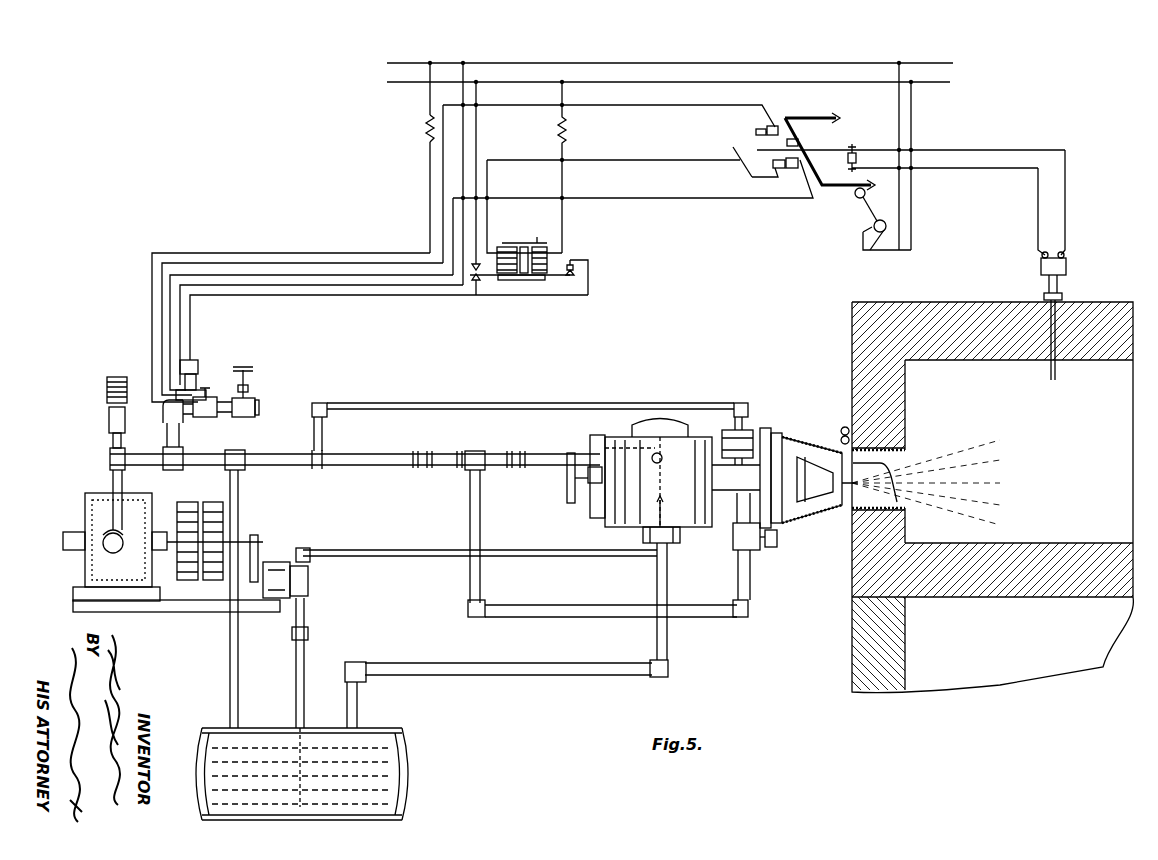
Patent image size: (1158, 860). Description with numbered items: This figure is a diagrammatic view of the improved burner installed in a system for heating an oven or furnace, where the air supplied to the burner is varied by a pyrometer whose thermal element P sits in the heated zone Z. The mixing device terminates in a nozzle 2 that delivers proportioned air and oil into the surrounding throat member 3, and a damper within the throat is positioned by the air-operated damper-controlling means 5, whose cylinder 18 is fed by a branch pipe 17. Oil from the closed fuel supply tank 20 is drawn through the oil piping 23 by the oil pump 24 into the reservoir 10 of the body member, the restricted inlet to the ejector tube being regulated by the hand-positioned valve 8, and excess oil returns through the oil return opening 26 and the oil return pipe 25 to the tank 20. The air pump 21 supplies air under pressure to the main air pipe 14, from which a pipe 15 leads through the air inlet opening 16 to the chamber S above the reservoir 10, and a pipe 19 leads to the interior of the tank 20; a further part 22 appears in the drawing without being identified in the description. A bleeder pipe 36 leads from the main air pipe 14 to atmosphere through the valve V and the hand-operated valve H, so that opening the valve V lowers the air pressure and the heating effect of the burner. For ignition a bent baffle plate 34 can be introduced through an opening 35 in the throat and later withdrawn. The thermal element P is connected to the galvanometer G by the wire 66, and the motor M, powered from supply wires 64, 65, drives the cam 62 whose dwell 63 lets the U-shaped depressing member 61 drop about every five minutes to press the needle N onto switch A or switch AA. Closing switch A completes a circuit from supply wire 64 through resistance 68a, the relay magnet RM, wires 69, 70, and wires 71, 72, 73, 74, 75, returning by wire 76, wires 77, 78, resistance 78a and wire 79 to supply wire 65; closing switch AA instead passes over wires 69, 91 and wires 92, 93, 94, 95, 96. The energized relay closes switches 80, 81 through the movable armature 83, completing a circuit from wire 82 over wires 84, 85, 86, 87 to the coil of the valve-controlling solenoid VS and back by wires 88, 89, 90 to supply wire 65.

The nozzle 2 is at (1004, 449).
The restricted throat member 3 is at (800, 432).
The damper positioning means 5 is at (757, 374).
The hand-positioned valve 8 is at (843, 439).
The reservoir 10 is at (634, 512).
The main air pipe 14 is at (377, 452).
The pipe 15 is at (551, 449).
The air inlet opening 16 is at (652, 456).
The pipe 17 is at (580, 400).
The cylinder 18 is at (758, 430).
The pipe 19 is at (240, 505).
The closed fuel supply tank 20 is at (302, 774).
The air pump 21 is at (84, 570).
The needle 22 is at (658, 502).
The oil piping 23 is at (313, 670).
The oil pump 24 is at (309, 585).
The oil return pipe 25 is at (462, 660).
The oil return opening 26 is at (673, 544).
The bent baffle plate 34 is at (890, 473).
The opening 35 is at (850, 450).
The bleeder pipe 36 is at (226, 418).
The U-shaped depressing member 61 is at (1078, 228).
The cam 62 is at (852, 200).
The dwell 63 is at (866, 193).
The supply wire 64 is at (938, 97).
The supply wire 65 is at (940, 73).
The wire 66 is at (1038, 228).
The resistance 68a is at (565, 137).
The wire 69 is at (488, 178).
The wire 70 is at (752, 180).
The wire 71 is at (702, 200).
The wire 72 is at (453, 210).
The wire 73 is at (326, 275).
The wire 74 is at (170, 310).
The wire 75 is at (173, 382).
The wire 76 is at (160, 410).
The wire 77 is at (152, 266).
The wire 78 is at (368, 255).
The resistance 78a is at (428, 126).
The wire 79 is at (428, 100).
The switch 80 is at (476, 298).
The switch 81 is at (580, 270).
The wire 82 is at (478, 123).
The movable armature 83 is at (514, 280).
The wire 84 is at (585, 259).
The wire 85 is at (590, 297).
The wire 86 is at (407, 297).
The wire 87 is at (192, 322).
The wire 88 is at (180, 333).
The wire 89 is at (348, 287).
The wire 90 is at (463, 230).
The wire 91 is at (733, 147).
The wire 92 is at (652, 102).
The wire 93 is at (443, 163).
The wire 94 is at (282, 263).
The wire 95 is at (162, 286).
The wire 96 is at (165, 387).